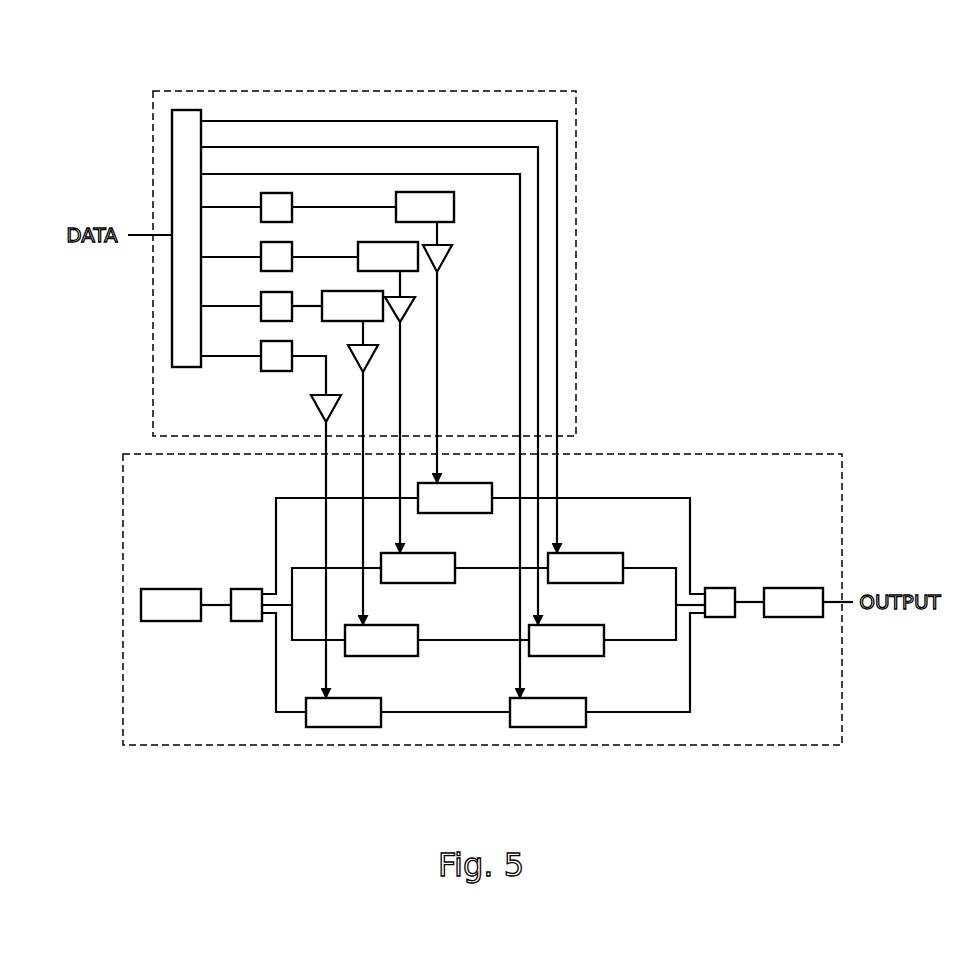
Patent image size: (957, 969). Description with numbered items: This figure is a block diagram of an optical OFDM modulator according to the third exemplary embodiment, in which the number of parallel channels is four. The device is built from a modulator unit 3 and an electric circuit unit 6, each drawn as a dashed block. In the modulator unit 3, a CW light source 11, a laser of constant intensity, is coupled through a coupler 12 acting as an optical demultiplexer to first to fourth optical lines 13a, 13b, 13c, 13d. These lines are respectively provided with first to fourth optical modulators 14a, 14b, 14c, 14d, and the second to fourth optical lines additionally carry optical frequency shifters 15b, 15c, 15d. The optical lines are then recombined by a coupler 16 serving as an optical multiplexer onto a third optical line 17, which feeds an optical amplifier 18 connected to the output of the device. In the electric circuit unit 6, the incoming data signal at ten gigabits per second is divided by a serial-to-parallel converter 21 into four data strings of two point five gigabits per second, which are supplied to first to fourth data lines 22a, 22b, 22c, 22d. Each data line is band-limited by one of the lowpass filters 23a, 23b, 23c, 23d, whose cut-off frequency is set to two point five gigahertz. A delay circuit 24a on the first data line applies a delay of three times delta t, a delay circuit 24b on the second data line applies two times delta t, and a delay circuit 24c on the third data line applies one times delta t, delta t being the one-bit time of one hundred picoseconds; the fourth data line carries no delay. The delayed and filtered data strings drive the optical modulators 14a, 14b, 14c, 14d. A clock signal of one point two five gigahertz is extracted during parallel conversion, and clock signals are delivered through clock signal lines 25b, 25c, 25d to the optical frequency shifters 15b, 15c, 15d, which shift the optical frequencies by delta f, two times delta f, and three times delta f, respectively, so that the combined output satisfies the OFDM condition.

The modulator unit 3 is at (482, 547).
The electric circuit unit 6 is at (409, 263).
The CW light source 11 is at (186, 645).
The coupler 12 is at (241, 645).
The first optical line 13a is at (442, 546).
The second optical line 13b is at (442, 598).
The third optical line 13c is at (389, 712).
The fourth optical line 13d is at (448, 676).
The first optical modulator 14a is at (462, 521).
The second optical modulator 14b is at (426, 591).
The third optical modulator 14c is at (390, 663).
The fourth optical modulator 14d is at (343, 758).
The optical frequency shifter 15b is at (600, 586).
The optical frequency shifter 15c is at (581, 658).
The optical frequency shifter 15d is at (548, 758).
The coupler 16 is at (719, 645).
The third optical line 17 is at (752, 561).
The optical amplifier 18 is at (808, 645).
The serial-to-parallel converter 21 is at (183, 200).
The first data line 22a is at (231, 230).
The second data line 22b is at (231, 280).
The third data line 22c is at (231, 329).
The fourth data line 22d is at (231, 379).
The lowpass filter 23a is at (328, 202).
The lowpass filter 23b is at (310, 248).
The lowpass filter 23c is at (309, 292).
The lowpass filter 23d is at (299, 519).
The delay circuit 24a is at (450, 337).
The delay circuit 24b is at (431, 397).
The delay circuit 24c is at (412, 458).
The clock signal line 25b is at (379, 293).
The clock signal line 25c is at (369, 329).
The clock signal line 25d is at (360, 365).